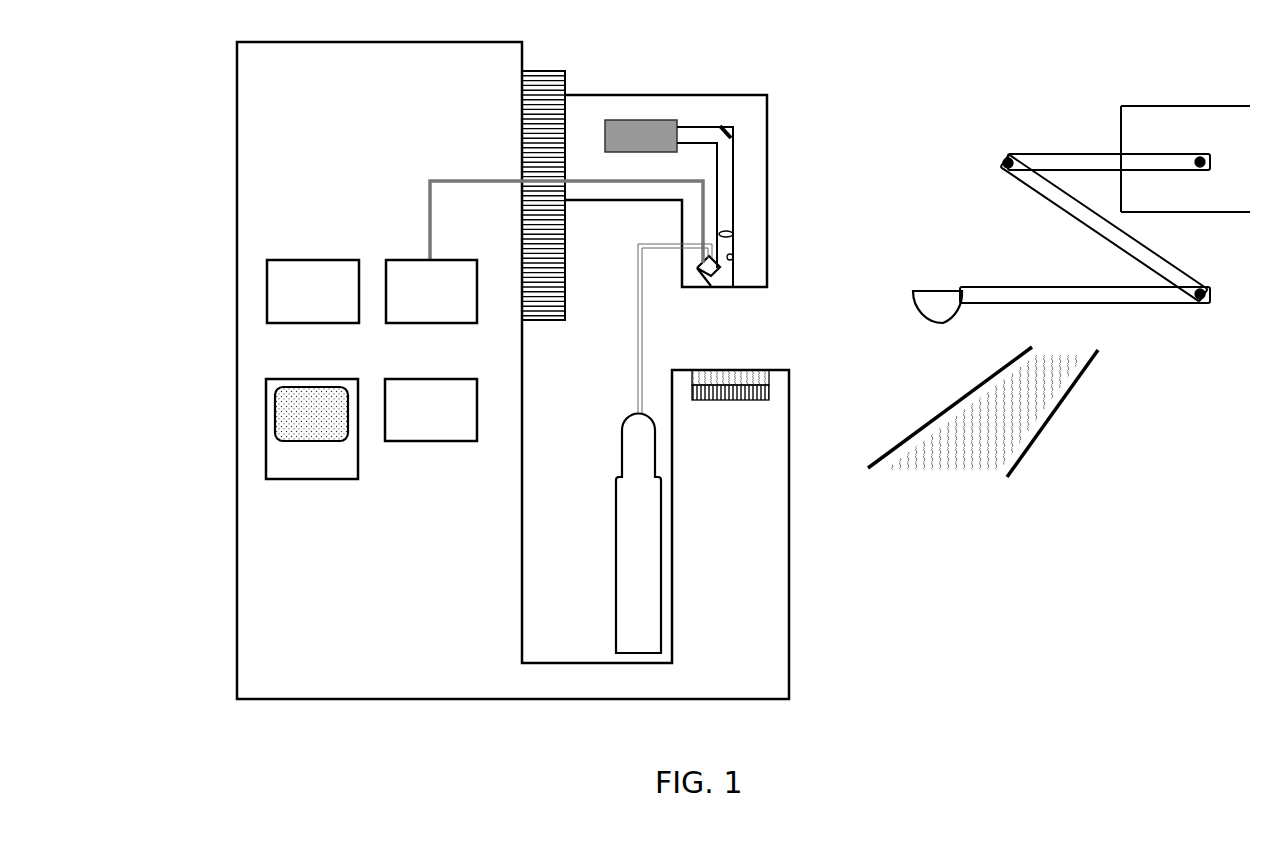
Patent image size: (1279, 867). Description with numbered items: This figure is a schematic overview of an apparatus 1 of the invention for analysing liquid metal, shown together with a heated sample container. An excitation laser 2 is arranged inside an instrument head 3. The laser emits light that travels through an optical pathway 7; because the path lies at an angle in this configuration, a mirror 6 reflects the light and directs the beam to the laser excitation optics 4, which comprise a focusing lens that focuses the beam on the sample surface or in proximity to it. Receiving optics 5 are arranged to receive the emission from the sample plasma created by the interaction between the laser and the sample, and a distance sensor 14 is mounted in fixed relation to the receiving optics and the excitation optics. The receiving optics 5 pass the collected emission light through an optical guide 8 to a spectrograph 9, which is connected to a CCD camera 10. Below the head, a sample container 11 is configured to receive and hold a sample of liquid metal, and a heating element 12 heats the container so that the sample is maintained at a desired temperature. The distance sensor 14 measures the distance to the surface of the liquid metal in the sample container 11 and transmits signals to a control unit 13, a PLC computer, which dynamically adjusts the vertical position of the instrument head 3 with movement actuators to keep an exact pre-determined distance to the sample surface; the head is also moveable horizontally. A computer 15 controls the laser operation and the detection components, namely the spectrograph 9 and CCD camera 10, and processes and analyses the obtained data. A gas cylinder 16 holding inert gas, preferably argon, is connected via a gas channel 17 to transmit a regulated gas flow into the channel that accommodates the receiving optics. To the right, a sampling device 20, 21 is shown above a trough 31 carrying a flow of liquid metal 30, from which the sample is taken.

The apparatus 1 is at (273, 120).
The excitation laser 2 is at (653, 125).
The instrument head 3 is at (592, 102).
The laser excitation optics 4 is at (727, 230).
The receiving optics 5 is at (710, 268).
The mirror 6 is at (728, 127).
The optical pathway 7 is at (729, 163).
The optical guide 8 is at (423, 203).
The spectrograph 9 is at (403, 268).
The CCD camera 10 is at (277, 303).
The sample container 11 is at (750, 380).
The heating element 12 is at (768, 390).
The control unit 13 is at (463, 423).
The distance sensor 14 is at (735, 256).
The computer 15 is at (283, 460).
The gas cylinder 16 is at (634, 556).
The gas channel 17 is at (637, 355).
The sampling device 20 is at (937, 302).
The sampling device 21 is at (1003, 293).
The flow of liquid metal 30 is at (1048, 385).
The trough 31 is at (1043, 435).